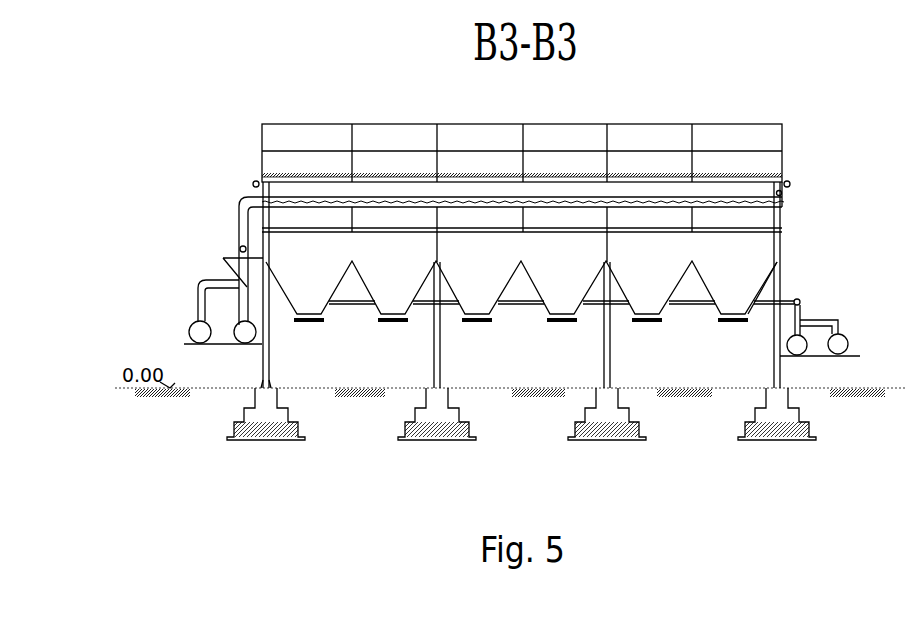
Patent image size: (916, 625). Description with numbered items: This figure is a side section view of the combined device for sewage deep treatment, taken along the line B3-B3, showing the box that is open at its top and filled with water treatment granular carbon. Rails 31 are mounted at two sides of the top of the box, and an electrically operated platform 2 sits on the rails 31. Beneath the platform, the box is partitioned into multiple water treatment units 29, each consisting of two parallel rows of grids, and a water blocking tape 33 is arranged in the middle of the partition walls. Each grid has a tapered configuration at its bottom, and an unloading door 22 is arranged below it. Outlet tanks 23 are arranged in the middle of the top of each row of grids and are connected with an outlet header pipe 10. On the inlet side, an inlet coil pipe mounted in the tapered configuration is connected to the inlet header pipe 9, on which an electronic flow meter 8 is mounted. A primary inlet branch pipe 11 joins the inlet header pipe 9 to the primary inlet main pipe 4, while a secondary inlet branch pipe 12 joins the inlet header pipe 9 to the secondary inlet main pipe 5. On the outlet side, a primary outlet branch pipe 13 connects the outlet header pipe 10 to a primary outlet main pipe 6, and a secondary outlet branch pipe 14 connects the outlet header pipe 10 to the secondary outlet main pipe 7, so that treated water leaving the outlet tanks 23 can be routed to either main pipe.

The electrically operated platform 2 is at (763, 175).
The rails 31 is at (781, 194).
The outlet tanks 23 is at (757, 207).
The water blocking tape 33 is at (522, 228).
The water treatment units 29 is at (521, 280).
The unloading door 22 is at (486, 322).
The inlet header pipe 9 is at (703, 305).
The electronic flow meter 8 is at (763, 305).
The secondary inlet branch pipe 12 is at (802, 313).
The primary inlet branch pipe 11 is at (838, 320).
The secondary inlet main pipe 5 is at (798, 345).
The primary inlet main pipe 4 is at (838, 345).
The outlet header pipe 10 is at (240, 233).
The primary outlet branch pipe 13 is at (197, 288).
The primary outlet main pipe 6 is at (199, 331).
The secondary outlet branch pipe 14 is at (268, 298).
The secondary outlet main pipe 7 is at (246, 333).